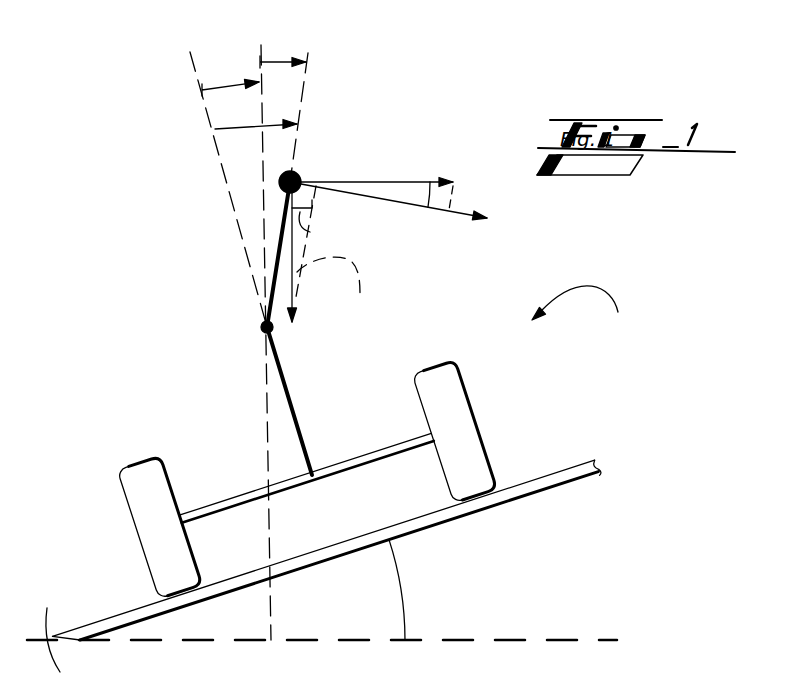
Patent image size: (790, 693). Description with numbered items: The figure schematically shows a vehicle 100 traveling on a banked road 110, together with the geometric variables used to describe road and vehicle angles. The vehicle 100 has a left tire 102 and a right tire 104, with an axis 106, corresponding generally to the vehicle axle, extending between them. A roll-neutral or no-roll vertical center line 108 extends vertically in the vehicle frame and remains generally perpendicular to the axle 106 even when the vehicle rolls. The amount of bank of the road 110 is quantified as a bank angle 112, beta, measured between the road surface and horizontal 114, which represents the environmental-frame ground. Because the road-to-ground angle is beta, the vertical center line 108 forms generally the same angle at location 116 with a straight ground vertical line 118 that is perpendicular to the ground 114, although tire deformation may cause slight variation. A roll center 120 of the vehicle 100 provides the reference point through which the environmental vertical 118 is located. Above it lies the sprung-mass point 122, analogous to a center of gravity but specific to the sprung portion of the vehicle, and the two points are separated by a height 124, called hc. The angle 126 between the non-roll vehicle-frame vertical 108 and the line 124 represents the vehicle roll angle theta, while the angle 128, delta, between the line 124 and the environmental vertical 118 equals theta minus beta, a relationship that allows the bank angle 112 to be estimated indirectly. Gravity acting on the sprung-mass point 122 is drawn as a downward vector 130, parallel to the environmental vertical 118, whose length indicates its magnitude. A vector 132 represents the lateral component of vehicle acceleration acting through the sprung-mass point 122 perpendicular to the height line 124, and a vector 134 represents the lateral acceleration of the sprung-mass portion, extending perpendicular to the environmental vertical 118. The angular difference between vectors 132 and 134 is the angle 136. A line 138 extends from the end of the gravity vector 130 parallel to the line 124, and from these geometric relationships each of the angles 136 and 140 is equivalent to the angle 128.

The vehicle 100 is at (585, 317).
The left tire 102 is at (137, 545).
The right tire 104 is at (473, 403).
The axis 106 is at (288, 492).
The no-roll vertical center line 108 is at (227, 90).
The road 110 is at (532, 478).
The bank angle 112 is at (403, 577).
The horizontal 114 is at (553, 638).
The second angle 116 is at (215, 129).
The ground vertical line 118 is at (260, 55).
The roll center 120 is at (263, 332).
The sprung-mass point 122 is at (300, 174).
The height 124 is at (280, 267).
The angle 126 is at (238, 135).
The angle 128 is at (278, 67).
The gravity vector 130 is at (280, 298).
The lateral component of vehicle acceleration 132 is at (365, 180).
The lateral mass-sprung acceleration vector 134 is at (450, 217).
The angle 136 is at (435, 210).
The line 138 is at (335, 260).
The angle 140 is at (310, 232).